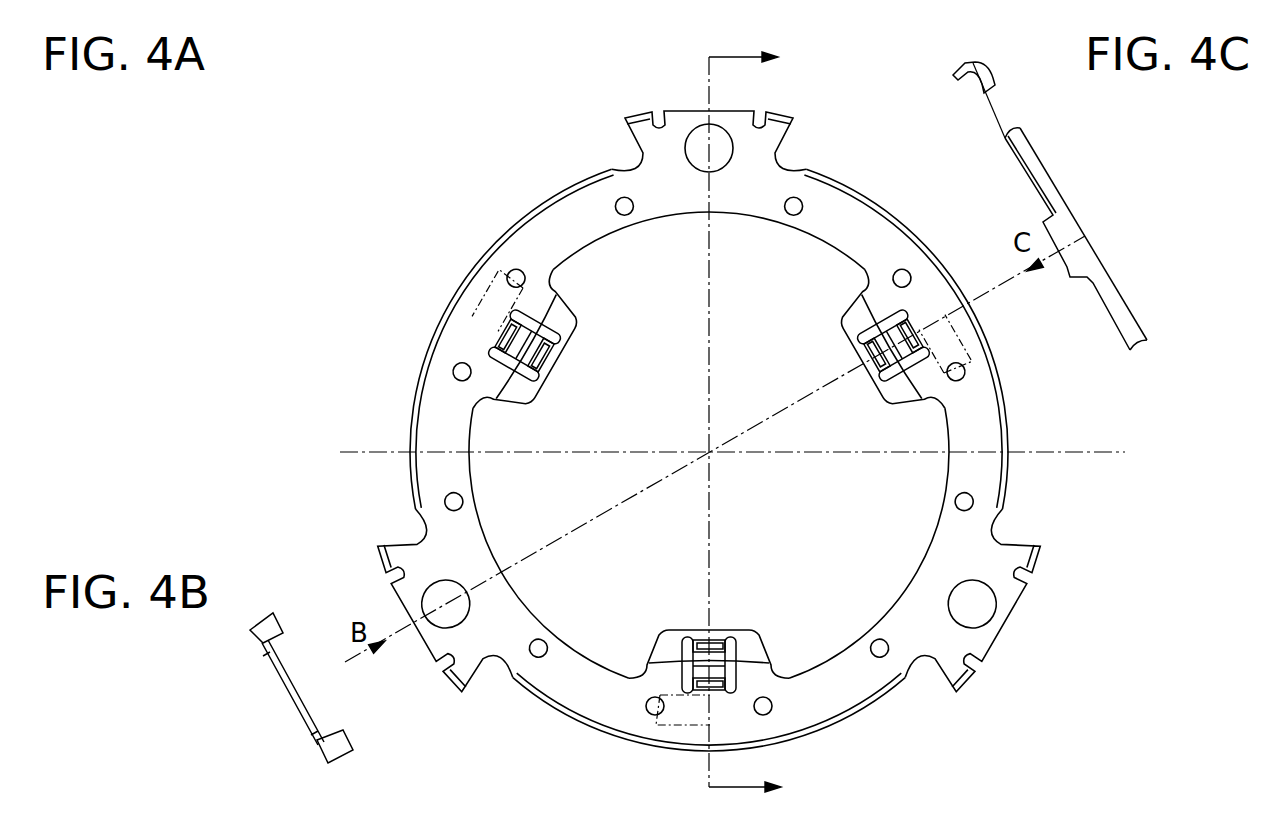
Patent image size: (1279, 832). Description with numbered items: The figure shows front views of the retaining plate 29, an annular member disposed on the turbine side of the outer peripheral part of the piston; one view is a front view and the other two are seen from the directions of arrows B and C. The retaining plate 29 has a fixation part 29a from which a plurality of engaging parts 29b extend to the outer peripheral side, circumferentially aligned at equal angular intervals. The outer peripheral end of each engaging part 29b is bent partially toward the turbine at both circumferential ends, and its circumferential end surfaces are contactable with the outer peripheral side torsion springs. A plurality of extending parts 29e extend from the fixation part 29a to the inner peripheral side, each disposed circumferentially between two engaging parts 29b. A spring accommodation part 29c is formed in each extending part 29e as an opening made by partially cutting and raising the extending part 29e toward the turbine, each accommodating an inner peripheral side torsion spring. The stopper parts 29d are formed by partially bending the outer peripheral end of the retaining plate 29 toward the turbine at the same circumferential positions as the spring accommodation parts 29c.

In FIG. 4A, the retaining plate 29 is at (437, 280).
In FIG. 4A, the fixation part 29a is at (565, 232).
In FIG. 4A, the engaging part 29b is at (675, 114).
In FIG. 4B, the engaging part 29b is at (340, 747).
In FIG. 4A, the spring accommodation part 29c is at (545, 338).
In FIG. 4A, the stopper part 29d is at (445, 312).
In FIG. 4C, the stopper part 29d is at (1074, 280).
In FIG. 4A, the extending part 29e is at (537, 404).